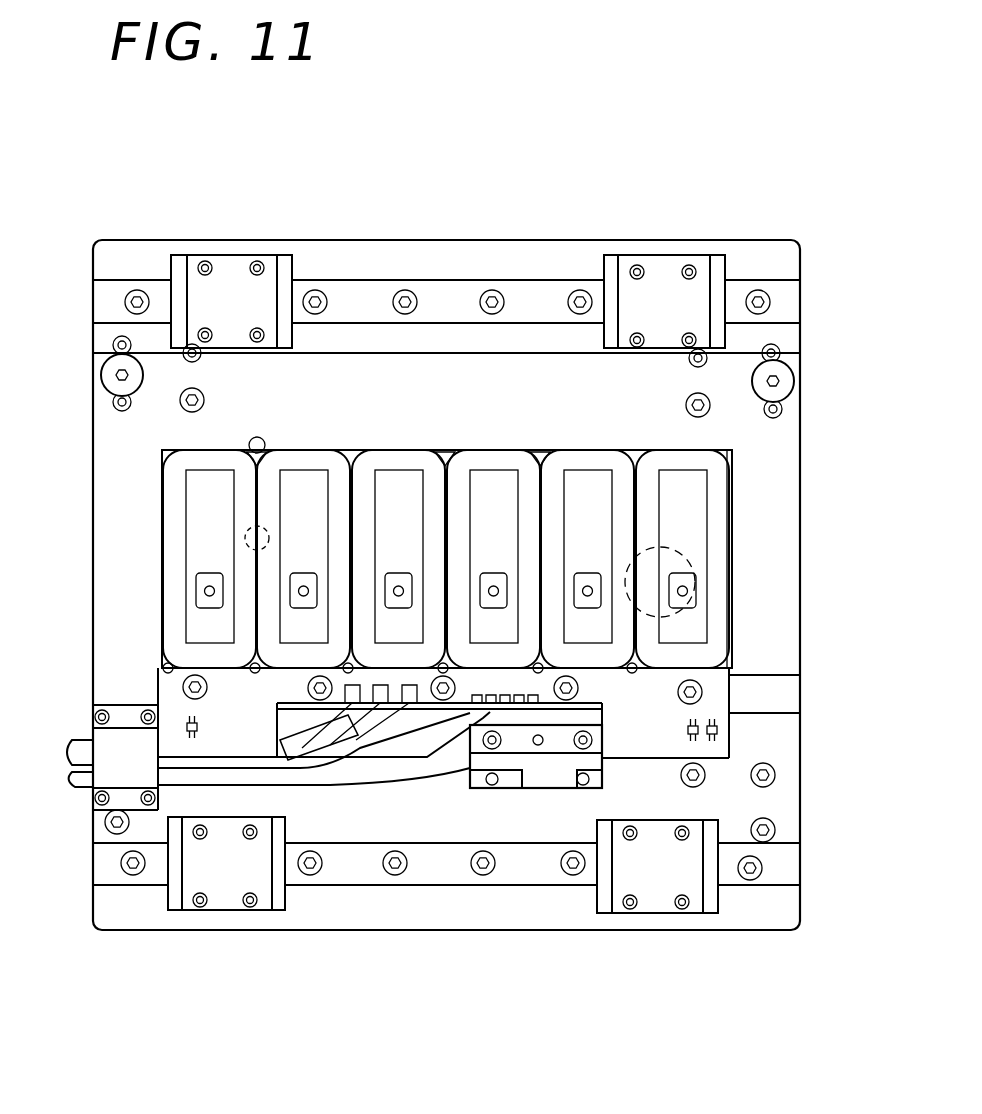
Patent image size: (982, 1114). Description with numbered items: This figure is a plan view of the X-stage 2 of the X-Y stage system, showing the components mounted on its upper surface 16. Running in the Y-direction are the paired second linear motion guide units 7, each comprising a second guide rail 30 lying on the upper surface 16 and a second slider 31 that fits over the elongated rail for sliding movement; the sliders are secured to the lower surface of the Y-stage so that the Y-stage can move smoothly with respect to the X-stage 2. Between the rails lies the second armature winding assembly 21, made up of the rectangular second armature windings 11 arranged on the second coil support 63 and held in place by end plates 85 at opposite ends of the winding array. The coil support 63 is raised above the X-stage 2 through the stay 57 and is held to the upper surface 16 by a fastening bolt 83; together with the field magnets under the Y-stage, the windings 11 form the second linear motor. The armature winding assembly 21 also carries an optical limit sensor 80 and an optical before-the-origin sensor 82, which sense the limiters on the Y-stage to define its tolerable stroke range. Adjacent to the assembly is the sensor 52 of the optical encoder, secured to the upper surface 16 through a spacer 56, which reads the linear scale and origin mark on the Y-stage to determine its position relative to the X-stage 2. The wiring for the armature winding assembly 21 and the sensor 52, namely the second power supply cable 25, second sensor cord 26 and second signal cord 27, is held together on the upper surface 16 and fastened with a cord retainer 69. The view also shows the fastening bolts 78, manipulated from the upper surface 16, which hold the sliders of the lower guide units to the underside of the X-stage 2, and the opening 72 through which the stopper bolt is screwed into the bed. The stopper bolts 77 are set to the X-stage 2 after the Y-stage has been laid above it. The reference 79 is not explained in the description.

The X-stage 2 is at (582, 232).
The second linear motion guide unit 7 is at (208, 248).
The second armature windings 11 is at (557, 475).
The upper surface 16 is at (430, 400).
The second armature winding assembly 21 is at (295, 690).
The second power supply cable 25 is at (72, 750).
The second sensor cord 26 is at (78, 780).
The second signal cord 27 is at (70, 770).
The second guide rail 30 is at (352, 297).
The second slider 31 is at (237, 290).
The sensor 52 is at (552, 777).
The spacer 56 is at (508, 782).
The stay 57 is at (128, 680).
The second coil support 63 is at (650, 692).
The cord retainer 69 is at (128, 772).
The opening 72 is at (700, 560).
The stopper bolts 77 is at (100, 376).
The fastening bolts 78 is at (118, 343).
The positioning pin 79 is at (250, 445).
The optical limit sensor 80 is at (186, 720).
The optical before-the-origin sensor 82 is at (719, 730).
The fastening bolt 83 is at (700, 690).
The end plates 85 is at (163, 512).